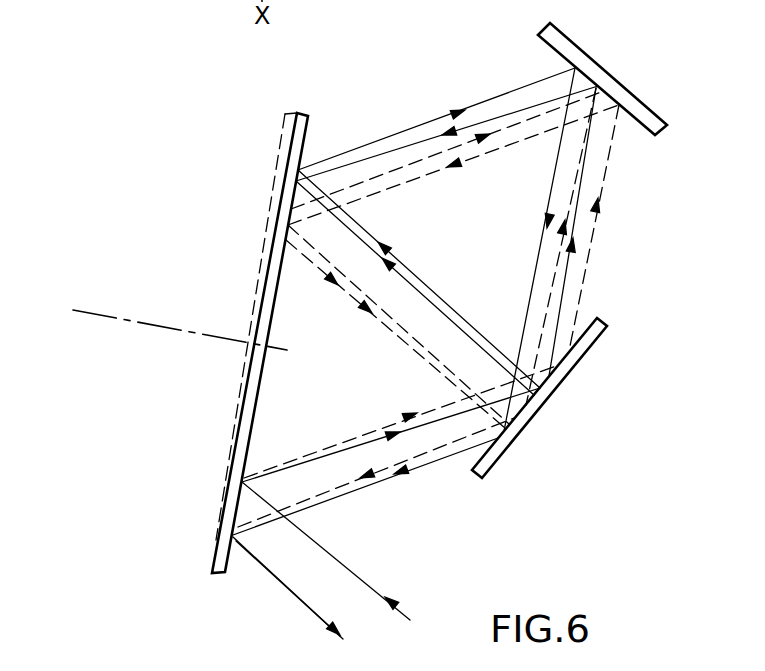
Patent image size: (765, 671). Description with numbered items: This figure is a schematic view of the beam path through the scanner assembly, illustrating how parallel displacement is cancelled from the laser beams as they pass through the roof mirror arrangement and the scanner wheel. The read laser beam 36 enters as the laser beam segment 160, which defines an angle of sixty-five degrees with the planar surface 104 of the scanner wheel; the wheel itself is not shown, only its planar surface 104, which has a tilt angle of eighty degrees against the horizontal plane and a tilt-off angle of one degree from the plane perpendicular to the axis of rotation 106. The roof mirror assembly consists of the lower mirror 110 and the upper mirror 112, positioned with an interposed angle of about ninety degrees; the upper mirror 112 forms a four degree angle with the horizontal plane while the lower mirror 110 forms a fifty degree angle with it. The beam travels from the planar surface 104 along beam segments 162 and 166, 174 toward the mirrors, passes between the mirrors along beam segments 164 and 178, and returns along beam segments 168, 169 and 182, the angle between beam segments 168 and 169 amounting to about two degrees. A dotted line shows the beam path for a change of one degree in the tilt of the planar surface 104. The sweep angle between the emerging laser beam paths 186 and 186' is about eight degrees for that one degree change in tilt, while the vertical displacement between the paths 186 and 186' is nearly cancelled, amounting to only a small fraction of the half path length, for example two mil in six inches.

The read laser beam 36 is at (378, 596).
The planar surface of the scanner wheel 104 is at (276, 242).
The axis of rotation 106 is at (148, 323).
The lower mirror 110 is at (540, 398).
The upper mirror 112 is at (568, 48).
The laser beam segment 160 is at (340, 562).
The beam segment 162 is at (338, 452).
The beam segment 164 is at (588, 198).
The beam segment 166 is at (408, 146).
The beam segment 168 is at (415, 292).
The beam segment 169 is at (402, 266).
The beam segment 174 is at (536, 82).
The beam segment 178 is at (550, 195).
The beam segment 182 is at (378, 483).
The emerging laser beam path 186 is at (288, 588).
The emerging laser beam path 186' is at (326, 588).